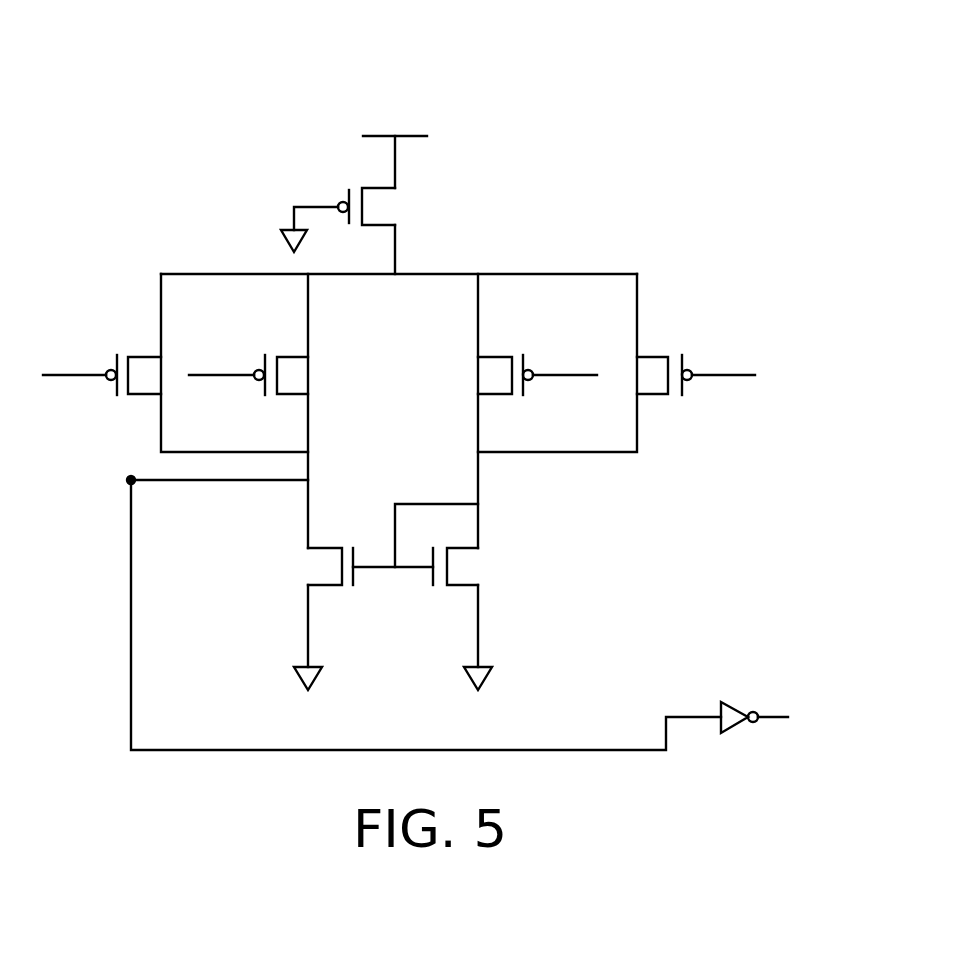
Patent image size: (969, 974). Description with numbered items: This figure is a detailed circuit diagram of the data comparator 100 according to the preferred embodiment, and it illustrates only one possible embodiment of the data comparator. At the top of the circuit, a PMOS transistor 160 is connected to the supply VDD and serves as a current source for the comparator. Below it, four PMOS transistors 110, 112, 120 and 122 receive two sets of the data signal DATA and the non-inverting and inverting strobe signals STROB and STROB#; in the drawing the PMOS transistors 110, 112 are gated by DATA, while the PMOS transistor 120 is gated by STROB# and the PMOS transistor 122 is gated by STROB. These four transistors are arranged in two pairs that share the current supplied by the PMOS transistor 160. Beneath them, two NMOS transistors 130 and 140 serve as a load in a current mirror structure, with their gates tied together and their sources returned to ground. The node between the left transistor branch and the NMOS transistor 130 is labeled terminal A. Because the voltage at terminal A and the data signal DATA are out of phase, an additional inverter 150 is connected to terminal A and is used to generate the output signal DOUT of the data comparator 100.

The data comparator 100 is at (660, 175).
The PMOS transistor 110 is at (293, 347).
The PMOS transistor 112 is at (145, 347).
The PMOS transistor 120 is at (495, 350).
The PMOS transistor 122 is at (653, 350).
The NMOS transistor 130 is at (313, 567).
The NMOS transistor 140 is at (472, 567).
The inverter 150 is at (730, 703).
The PMOS transistor 160 is at (378, 187).